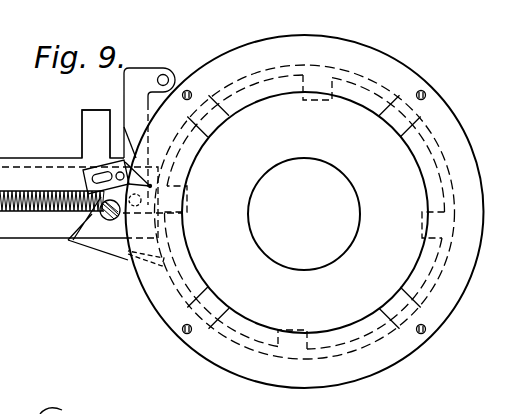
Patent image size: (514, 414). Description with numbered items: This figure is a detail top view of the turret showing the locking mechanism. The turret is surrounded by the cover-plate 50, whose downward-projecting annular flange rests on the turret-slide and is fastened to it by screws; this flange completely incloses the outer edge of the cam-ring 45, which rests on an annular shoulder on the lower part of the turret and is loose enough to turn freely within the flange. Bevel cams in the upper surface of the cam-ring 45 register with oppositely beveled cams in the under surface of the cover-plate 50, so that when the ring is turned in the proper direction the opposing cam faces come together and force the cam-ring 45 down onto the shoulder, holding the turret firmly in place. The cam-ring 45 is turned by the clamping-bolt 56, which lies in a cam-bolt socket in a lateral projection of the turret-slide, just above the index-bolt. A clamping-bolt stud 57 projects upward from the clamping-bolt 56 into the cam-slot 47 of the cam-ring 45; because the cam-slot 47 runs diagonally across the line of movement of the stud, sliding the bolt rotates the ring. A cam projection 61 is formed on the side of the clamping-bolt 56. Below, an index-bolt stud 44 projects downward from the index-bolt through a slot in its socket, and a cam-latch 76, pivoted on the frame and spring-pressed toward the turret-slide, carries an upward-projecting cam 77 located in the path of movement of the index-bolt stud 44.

The index-bolt stud 44 is at (136, 206).
The cam-ring 45 is at (445, 286).
The cam-slot 47 is at (438, 223).
The cover-plate 50 is at (446, 305).
The clamping-bolt 56 is at (37, 238).
The clamping-bolt stud 57 is at (110, 219).
The cam projection 61 is at (88, 113).
The cam-latch 76 is at (124, 87).
The cam 77 is at (128, 147).